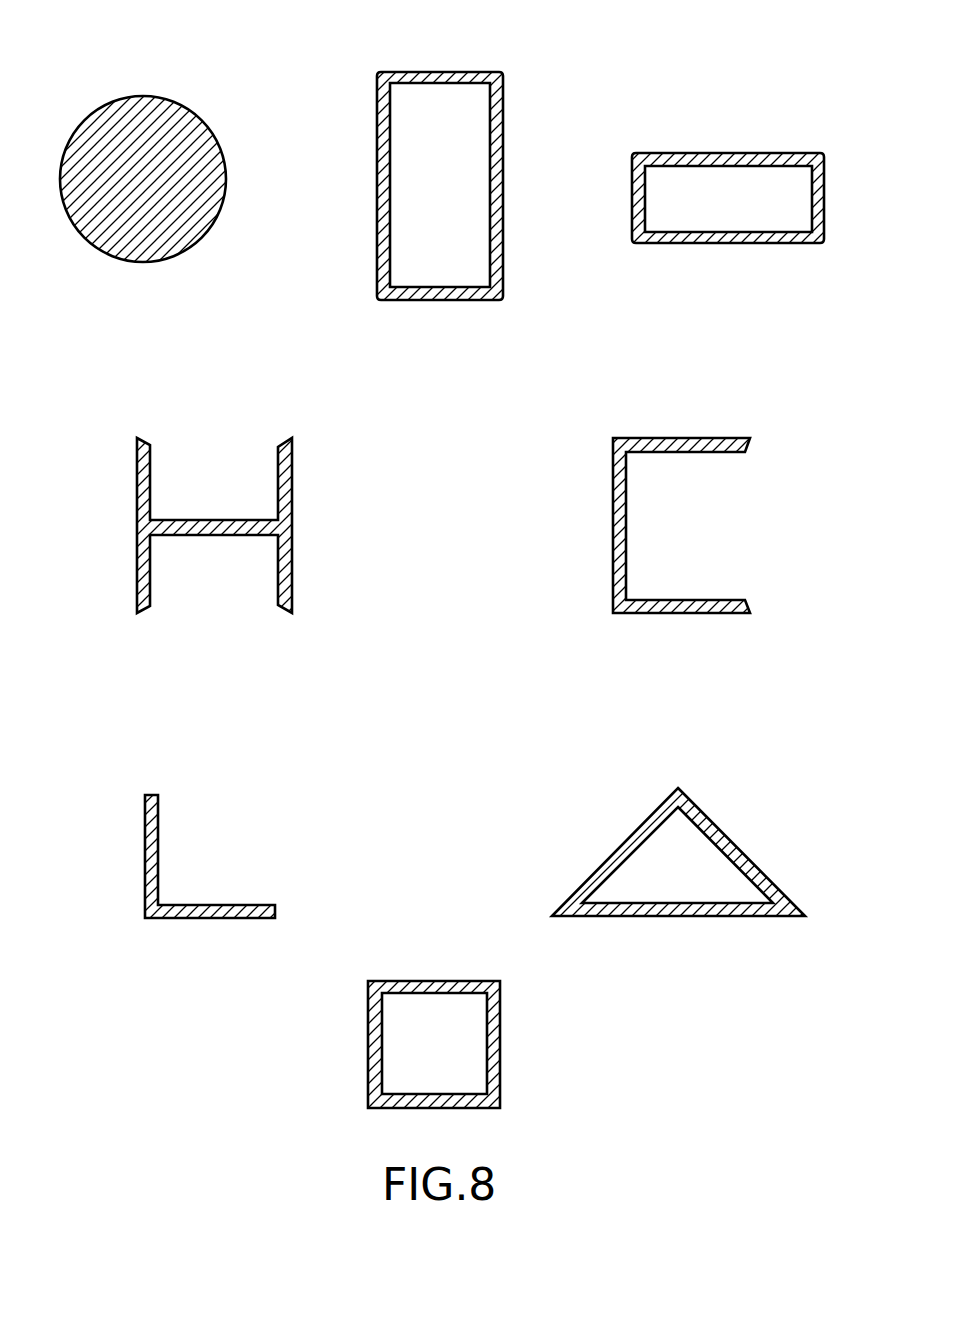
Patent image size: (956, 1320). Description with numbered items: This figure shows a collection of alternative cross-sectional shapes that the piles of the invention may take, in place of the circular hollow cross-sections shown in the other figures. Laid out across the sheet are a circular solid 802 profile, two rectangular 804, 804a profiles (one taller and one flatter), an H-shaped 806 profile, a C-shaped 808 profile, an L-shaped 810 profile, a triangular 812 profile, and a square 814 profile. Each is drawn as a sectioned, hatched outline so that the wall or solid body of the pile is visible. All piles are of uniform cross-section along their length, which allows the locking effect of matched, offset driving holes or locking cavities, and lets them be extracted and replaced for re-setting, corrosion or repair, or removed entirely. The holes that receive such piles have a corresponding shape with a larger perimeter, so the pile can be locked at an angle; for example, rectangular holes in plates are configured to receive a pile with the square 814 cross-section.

The circular solid cross-section 802 is at (143, 97).
The rectangular cross-section 804 is at (438, 72).
The rectangular cross-section 804a is at (728, 153).
The H-shaped cross-section 806 is at (137, 493).
The C-shaped cross-section 808 is at (720, 600).
The L-shaped cross-section 810 is at (145, 842).
The triangular cross-section 812 is at (732, 840).
The square cross-section 814 is at (500, 1044).